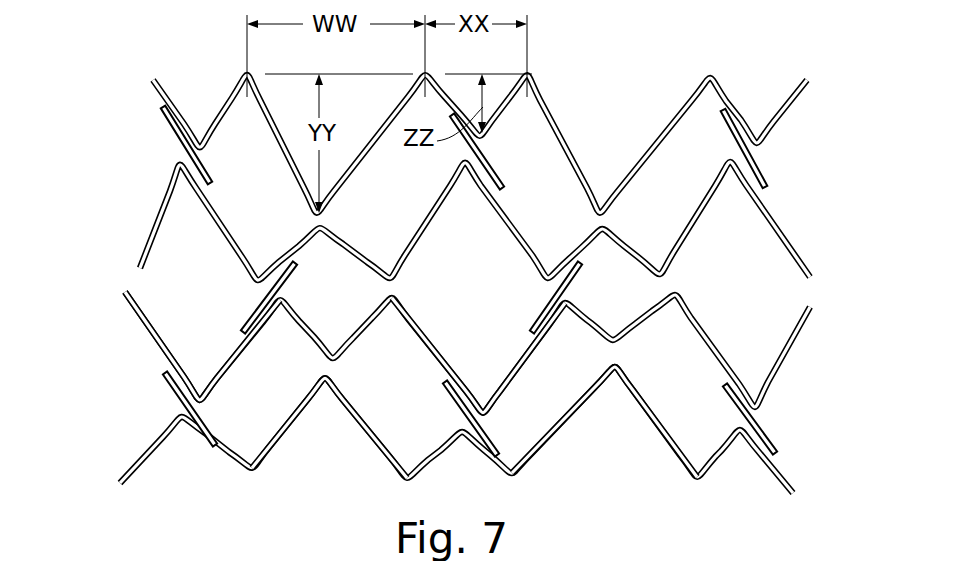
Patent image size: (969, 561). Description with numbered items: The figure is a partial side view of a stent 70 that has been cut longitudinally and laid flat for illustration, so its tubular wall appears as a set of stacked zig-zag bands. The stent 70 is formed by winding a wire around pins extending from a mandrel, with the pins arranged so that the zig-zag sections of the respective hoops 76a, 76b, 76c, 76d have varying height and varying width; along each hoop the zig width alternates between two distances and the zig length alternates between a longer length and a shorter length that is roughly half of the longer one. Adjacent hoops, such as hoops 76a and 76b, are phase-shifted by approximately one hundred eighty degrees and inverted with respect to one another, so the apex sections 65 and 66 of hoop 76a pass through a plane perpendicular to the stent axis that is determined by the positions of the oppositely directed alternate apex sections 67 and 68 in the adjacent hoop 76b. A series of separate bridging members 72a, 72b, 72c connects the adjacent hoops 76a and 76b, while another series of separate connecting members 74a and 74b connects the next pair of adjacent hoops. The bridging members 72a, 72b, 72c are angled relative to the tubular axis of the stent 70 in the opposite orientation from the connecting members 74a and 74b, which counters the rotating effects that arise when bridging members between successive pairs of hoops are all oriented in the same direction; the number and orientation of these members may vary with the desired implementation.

The stent 70 is at (610, 84).
The hoop 76a is at (118, 452).
The hoop 76b is at (130, 342).
The hoop 76c is at (133, 225).
The hoop 76d is at (140, 118).
The bridging member 72a is at (197, 415).
The bridging member 72b is at (457, 420).
The bridging member 72c is at (757, 423).
The connecting member 74a is at (285, 287).
The connecting member 74b is at (567, 283).
The apex section 65 is at (325, 384).
The apex section 66 is at (617, 369).
The apex section 67 is at (200, 396).
The apex section 68 is at (483, 406).